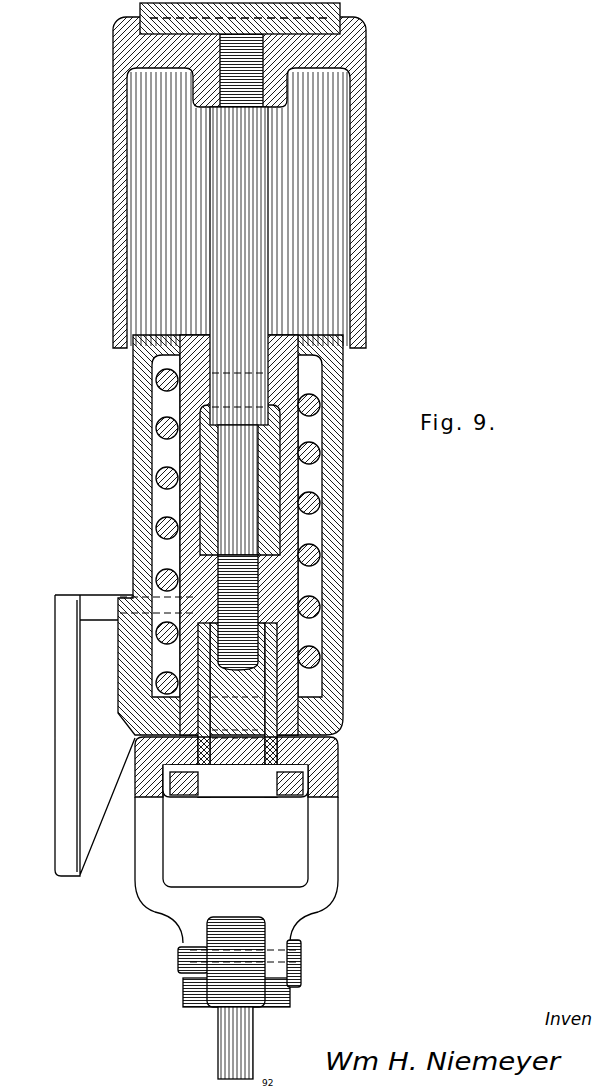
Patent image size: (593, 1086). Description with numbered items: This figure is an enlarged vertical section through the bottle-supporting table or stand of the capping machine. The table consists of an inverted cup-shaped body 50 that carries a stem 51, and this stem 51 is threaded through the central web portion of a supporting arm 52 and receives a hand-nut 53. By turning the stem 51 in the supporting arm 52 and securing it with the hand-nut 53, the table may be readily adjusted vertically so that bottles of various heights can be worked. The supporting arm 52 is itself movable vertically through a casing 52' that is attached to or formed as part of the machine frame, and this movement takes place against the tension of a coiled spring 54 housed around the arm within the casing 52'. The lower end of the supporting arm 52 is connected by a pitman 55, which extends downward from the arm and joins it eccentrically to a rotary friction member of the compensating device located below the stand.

The inverted cup-shaped body 50 is at (366, 197).
The stem 51 is at (247, 482).
The supporting arm 52 is at (283, 566).
The casing 52' is at (254, 535).
The hand-nut 53 is at (283, 783).
The coiled spring 54 is at (320, 548).
The pitman 55 is at (253, 1037).